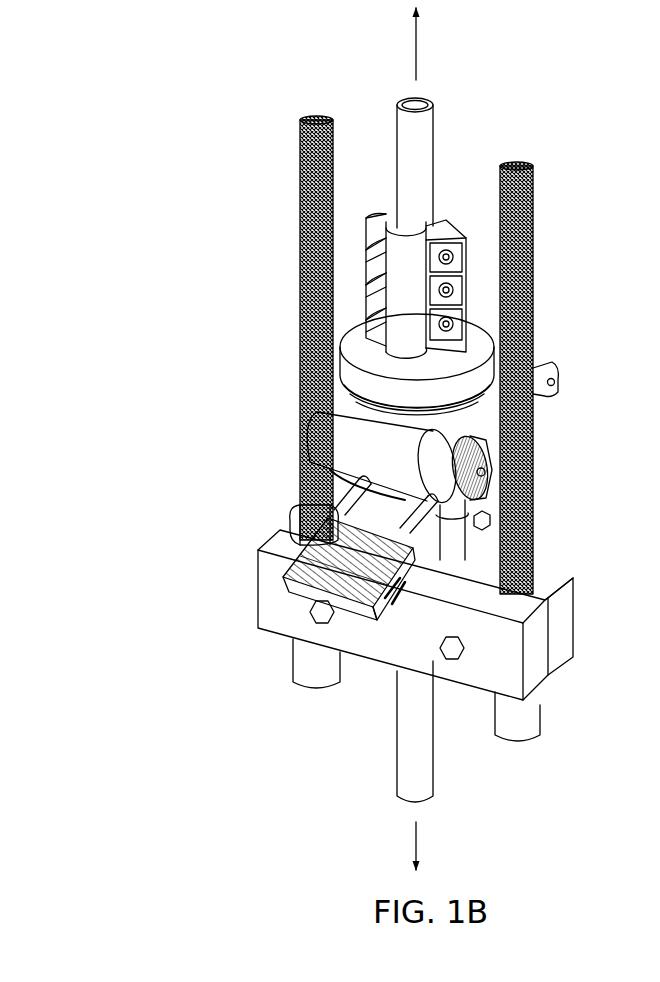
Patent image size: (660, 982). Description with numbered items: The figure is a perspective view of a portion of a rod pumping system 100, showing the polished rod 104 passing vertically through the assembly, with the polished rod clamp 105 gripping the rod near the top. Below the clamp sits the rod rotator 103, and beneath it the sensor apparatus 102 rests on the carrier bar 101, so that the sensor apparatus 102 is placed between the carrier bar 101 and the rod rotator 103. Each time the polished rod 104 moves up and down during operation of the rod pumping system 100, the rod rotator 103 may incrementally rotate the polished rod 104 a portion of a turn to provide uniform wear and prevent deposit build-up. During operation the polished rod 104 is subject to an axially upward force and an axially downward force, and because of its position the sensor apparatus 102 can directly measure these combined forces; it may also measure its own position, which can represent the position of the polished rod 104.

The rod pumping system 100 is at (110, 720).
The carrier bar 101 is at (275, 600).
The sensor apparatus 102 is at (337, 533).
The rod rotator 103 is at (303, 305).
The polished rod 104 is at (402, 207).
The polished rod clamp 105 is at (447, 227).